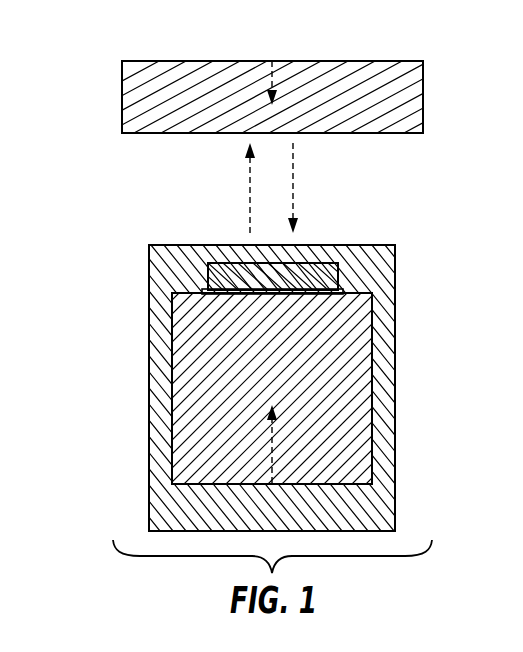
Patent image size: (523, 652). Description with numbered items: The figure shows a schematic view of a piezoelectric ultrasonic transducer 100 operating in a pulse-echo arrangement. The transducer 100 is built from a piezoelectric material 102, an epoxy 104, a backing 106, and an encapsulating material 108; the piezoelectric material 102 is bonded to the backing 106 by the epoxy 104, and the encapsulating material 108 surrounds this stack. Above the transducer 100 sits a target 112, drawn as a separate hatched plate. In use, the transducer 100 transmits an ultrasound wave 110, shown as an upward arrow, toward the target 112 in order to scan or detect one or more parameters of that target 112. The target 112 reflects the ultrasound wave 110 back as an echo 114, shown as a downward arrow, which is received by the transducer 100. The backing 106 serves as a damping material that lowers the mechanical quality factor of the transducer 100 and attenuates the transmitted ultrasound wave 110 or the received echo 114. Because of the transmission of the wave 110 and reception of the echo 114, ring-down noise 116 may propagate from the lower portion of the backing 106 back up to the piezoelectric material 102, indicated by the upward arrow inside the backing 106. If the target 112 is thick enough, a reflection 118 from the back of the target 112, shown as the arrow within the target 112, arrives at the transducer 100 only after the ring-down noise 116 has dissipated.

The piezoelectric ultrasonic transducer 100 is at (261, 358).
The piezoelectric material 102 is at (312, 278).
The epoxy 104 is at (220, 296).
The backing 106 is at (199, 369).
The encapsulating material 108 is at (183, 507).
The ultrasound wave 110 is at (250, 190).
The target 112 is at (122, 97).
The echo 114 is at (295, 188).
The ring-down noise 116 is at (273, 447).
The reflection 118 is at (275, 68).